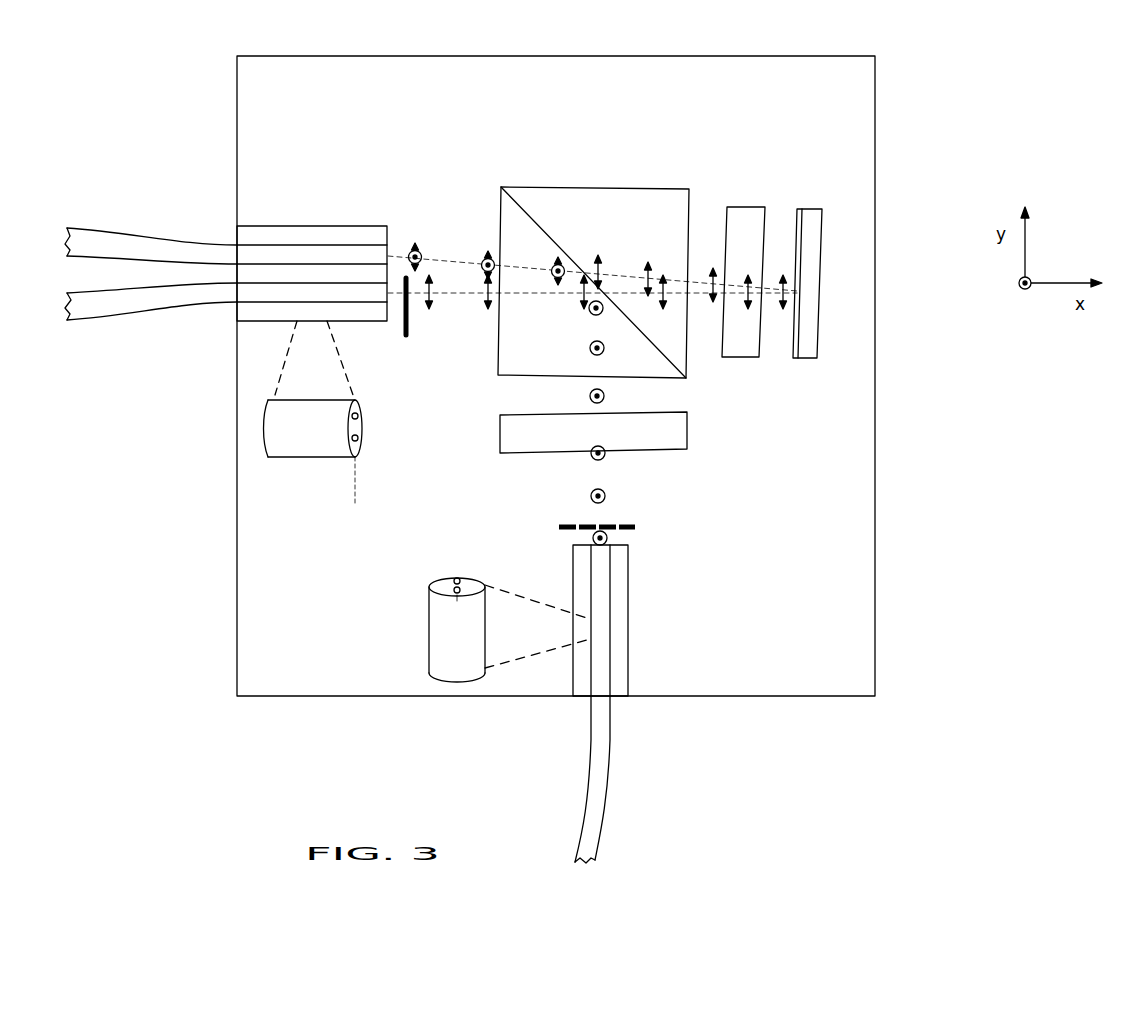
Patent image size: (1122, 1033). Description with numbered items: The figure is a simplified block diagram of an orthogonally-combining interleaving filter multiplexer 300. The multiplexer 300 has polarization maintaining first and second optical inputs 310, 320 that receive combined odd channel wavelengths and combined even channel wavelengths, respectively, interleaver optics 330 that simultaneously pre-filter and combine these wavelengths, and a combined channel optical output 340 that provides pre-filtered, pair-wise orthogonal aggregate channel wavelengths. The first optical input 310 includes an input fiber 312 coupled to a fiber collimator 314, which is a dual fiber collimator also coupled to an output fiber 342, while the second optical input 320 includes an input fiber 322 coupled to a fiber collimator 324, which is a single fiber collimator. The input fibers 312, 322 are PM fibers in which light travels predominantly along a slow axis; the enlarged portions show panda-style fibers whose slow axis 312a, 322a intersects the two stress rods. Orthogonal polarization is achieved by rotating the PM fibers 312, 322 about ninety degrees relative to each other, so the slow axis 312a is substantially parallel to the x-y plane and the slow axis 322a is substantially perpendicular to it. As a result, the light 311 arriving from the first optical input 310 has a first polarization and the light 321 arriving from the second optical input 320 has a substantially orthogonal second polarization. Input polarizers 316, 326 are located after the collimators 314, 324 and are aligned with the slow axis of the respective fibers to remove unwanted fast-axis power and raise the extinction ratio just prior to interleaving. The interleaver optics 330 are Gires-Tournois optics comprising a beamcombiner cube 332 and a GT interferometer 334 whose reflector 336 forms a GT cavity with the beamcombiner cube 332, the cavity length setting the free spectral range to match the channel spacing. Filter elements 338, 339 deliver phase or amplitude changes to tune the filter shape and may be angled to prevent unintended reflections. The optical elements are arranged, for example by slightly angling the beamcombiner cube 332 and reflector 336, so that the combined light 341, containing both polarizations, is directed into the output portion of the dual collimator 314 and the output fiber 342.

The orthogonally-combining interleaving filter multiplexer 300 is at (952, 122).
The first optical input 310 is at (226, 334).
The light 311 is at (429, 310).
The input fiber 312 is at (213, 297).
The slow axis 312a is at (355, 475).
The fiber collimator 314 is at (365, 322).
The input polarizer 316 is at (406, 336).
The second optical input 320 is at (567, 610).
The light 321 is at (607, 496).
The input fiber 322 is at (598, 730).
The slow axis 322a is at (458, 575).
The fiber collimator 324 is at (628, 635).
The input polarizer 326 is at (559, 528).
The interleaver optics 330 is at (593, 223).
The beamcombiner cube 332 is at (522, 188).
The GT interferometer 334 is at (770, 252).
The reflector 336 is at (808, 350).
The filter element 338 is at (742, 349).
The filter element 339 is at (680, 431).
The combined channel optical output 340 is at (290, 203).
The combined light 341 is at (414, 245).
The output fiber 342 is at (209, 246).